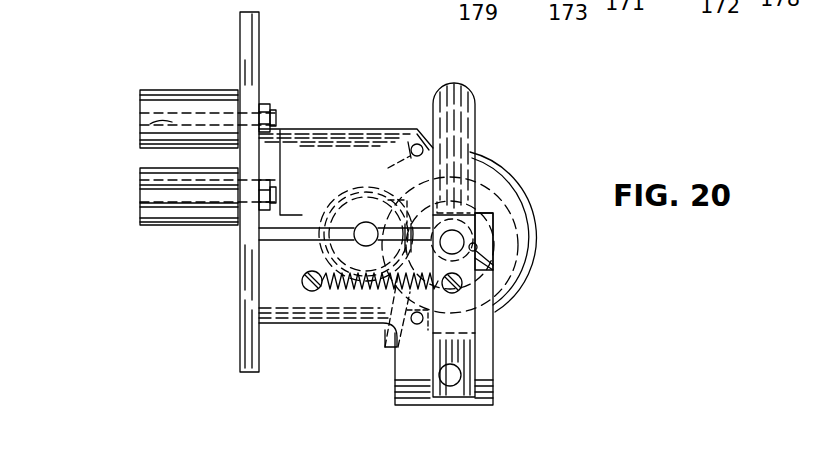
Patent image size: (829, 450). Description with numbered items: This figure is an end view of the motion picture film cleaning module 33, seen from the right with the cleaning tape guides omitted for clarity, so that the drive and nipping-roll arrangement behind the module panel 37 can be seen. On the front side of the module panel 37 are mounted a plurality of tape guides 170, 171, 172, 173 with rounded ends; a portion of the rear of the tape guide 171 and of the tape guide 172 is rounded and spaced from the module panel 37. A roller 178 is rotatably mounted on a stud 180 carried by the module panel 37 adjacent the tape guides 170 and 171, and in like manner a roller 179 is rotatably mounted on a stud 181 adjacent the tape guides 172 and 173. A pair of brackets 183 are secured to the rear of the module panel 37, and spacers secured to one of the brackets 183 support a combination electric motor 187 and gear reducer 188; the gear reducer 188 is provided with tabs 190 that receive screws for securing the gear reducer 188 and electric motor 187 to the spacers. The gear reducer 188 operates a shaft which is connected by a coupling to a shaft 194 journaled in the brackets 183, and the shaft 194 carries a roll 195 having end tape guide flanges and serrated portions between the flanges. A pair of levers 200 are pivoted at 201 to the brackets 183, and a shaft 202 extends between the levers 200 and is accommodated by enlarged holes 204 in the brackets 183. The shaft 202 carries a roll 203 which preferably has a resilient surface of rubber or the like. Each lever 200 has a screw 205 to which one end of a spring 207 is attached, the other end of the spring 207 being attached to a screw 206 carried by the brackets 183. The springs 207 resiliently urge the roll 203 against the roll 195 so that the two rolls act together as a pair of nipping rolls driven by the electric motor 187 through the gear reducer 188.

The motion picture film cleaning module 33 is at (222, 53).
The module panel 37 is at (247, 275).
The tape guide 170 is at (143, 120).
The tape guide 171 is at (143, 133).
The tape guide 172 is at (148, 176).
The tape guide 173 is at (148, 214).
The roller 178 is at (148, 107).
The roller 179 is at (148, 198).
The stud 180 is at (274, 115).
The stud 181 is at (274, 193).
The bracket 183 is at (344, 134).
The electric motor 187 is at (511, 172).
The gear reducer 188 is at (522, 192).
The tab 190 is at (403, 127).
The shaft 194 is at (360, 236).
The roll 195 is at (327, 192).
The lever 200 is at (470, 109).
The pivot 201 is at (455, 375).
The shaft 202 is at (456, 240).
The roll 203 is at (500, 277).
The enlarged hole 204 is at (477, 249).
The screw 205 is at (462, 284).
The screw 206 is at (310, 292).
The spring 207 is at (350, 292).